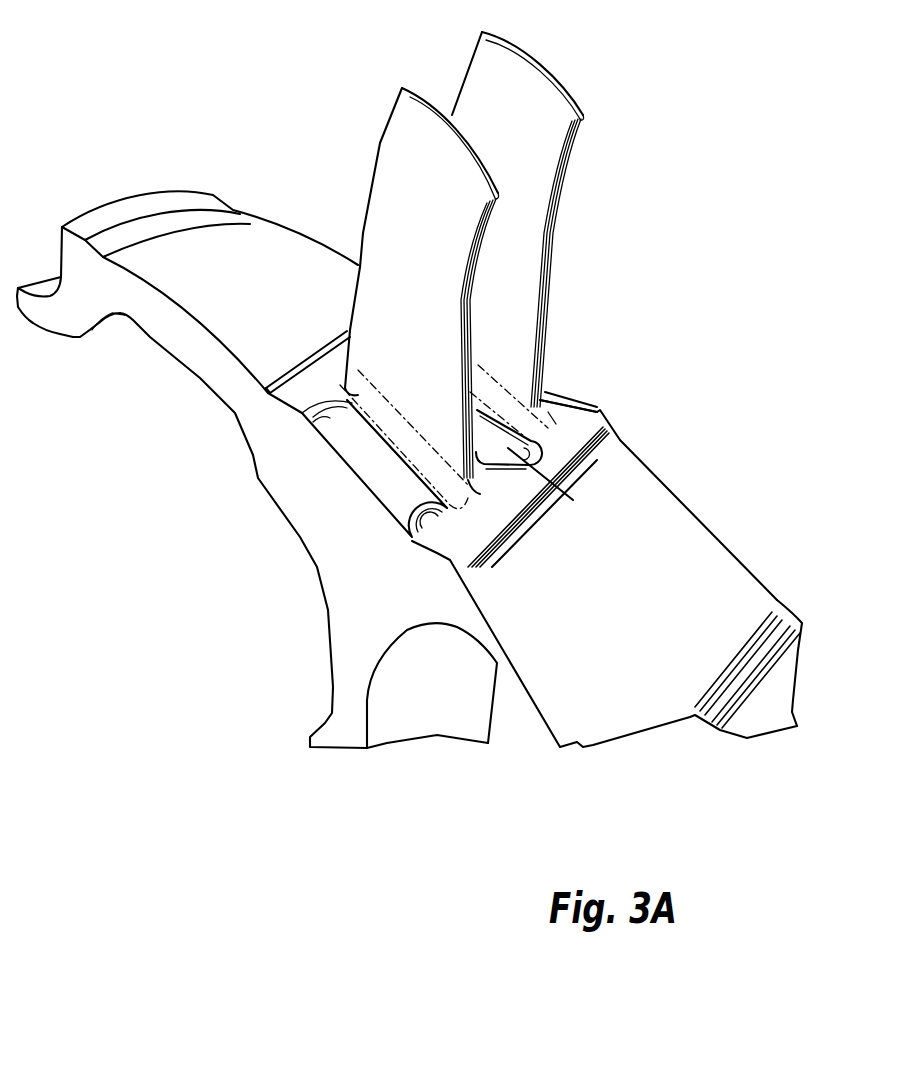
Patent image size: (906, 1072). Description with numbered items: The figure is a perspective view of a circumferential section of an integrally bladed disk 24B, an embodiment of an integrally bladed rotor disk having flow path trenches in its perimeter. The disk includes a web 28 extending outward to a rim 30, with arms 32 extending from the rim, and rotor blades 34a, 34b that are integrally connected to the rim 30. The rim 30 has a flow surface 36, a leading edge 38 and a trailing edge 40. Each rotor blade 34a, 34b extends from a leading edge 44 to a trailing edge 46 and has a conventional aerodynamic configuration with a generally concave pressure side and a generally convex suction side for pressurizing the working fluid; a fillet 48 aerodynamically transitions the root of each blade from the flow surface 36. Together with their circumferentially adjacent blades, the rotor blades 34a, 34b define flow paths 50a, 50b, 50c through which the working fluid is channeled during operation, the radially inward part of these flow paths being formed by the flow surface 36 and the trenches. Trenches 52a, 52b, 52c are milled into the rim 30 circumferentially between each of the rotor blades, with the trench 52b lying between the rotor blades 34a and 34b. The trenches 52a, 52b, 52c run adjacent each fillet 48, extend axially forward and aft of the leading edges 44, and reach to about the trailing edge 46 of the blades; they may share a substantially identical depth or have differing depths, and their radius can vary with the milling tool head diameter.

The integrally bladed disk 24B is at (266, 114).
The web 28 is at (345, 697).
The rim 30 is at (333, 546).
The arms 32 is at (260, 247).
The rotor blade 34a is at (427, 97).
The rotor blade 34b is at (550, 73).
The flow surface 36 is at (484, 540).
The leading edge 38 is at (613, 428).
The trailing edge 40 is at (336, 337).
The leading edge 44 is at (556, 230).
The trailing edge 46 is at (476, 47).
The fillet 48 is at (310, 362).
The flow path 50a is at (385, 381).
The flow path 50b is at (530, 377).
The flow path 50c is at (575, 279).
The trench 52a is at (358, 467).
The trench 52b is at (556, 482).
The trench 52c is at (578, 413).